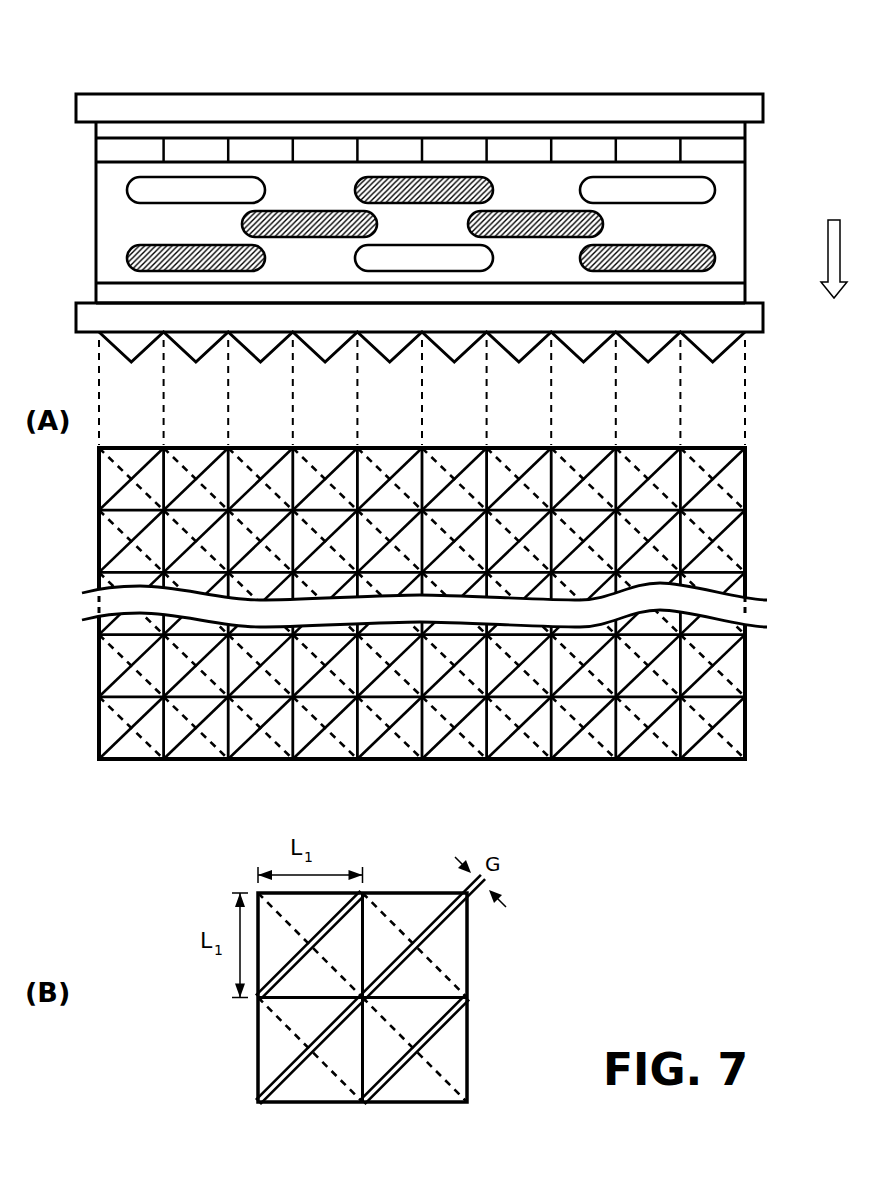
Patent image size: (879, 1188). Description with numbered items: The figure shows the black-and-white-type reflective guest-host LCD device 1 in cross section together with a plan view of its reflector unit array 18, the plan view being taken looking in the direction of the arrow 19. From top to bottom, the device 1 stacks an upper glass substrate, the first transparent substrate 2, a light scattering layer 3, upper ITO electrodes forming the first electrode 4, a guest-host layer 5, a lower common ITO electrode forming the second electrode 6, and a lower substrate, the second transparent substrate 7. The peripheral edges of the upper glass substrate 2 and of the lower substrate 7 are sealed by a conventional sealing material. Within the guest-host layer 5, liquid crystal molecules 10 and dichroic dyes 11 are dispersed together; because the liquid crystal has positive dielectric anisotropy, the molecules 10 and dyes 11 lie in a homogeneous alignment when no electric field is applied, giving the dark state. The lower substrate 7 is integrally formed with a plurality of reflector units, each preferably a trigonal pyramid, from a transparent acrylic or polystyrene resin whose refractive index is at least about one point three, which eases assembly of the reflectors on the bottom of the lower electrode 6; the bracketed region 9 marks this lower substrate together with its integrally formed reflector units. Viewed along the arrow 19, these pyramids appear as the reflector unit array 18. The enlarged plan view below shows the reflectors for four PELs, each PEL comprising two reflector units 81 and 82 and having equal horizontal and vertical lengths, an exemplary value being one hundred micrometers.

The reflective guest-host LCD device 1 is at (452, 199).
The first transparent substrate 2 is at (755, 104).
The light scattering layer 3 is at (740, 131).
The first electrode 4 is at (740, 150).
The guest-host layer 5 is at (450, 228).
The second electrode 6 is at (738, 292).
The second transparent substrate 7 is at (755, 318).
The prism sheet 9 is at (796, 300).
The liquid crystal molecules 10 is at (745, 188).
The dichroic dyes 11 is at (745, 252).
The reflector unit array 18 is at (728, 477).
The arrow 19 is at (840, 221).
The reflector unit 81 is at (280, 928).
The reflector unit 82 is at (350, 984).